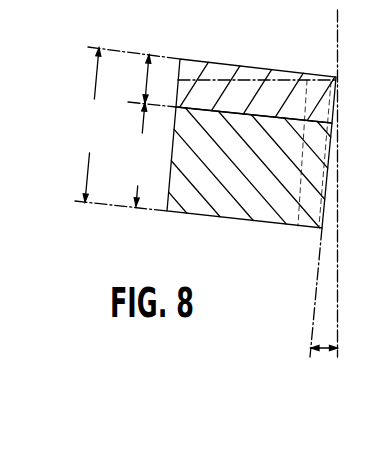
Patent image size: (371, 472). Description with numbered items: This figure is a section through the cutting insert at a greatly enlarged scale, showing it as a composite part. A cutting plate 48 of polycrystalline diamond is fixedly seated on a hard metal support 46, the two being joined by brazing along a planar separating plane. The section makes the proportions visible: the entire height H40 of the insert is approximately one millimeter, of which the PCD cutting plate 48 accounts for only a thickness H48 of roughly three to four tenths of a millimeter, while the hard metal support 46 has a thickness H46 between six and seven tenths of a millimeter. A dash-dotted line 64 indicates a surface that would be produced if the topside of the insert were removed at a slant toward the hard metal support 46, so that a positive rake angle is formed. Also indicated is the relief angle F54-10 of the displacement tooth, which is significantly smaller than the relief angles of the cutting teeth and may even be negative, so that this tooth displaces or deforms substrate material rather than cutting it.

The cutting plate 48 is at (250, 74).
The hard metal support 46 is at (212, 193).
The dash-dotted line 64 is at (200, 82).
The entire height H40 is at (127, 129).
The thickness of the PCD cutting plate H48 is at (148, 68).
The thickness of the hard metal support H46 is at (151, 154).
The relief angle of the displacement tooth F54-10 is at (323, 347).